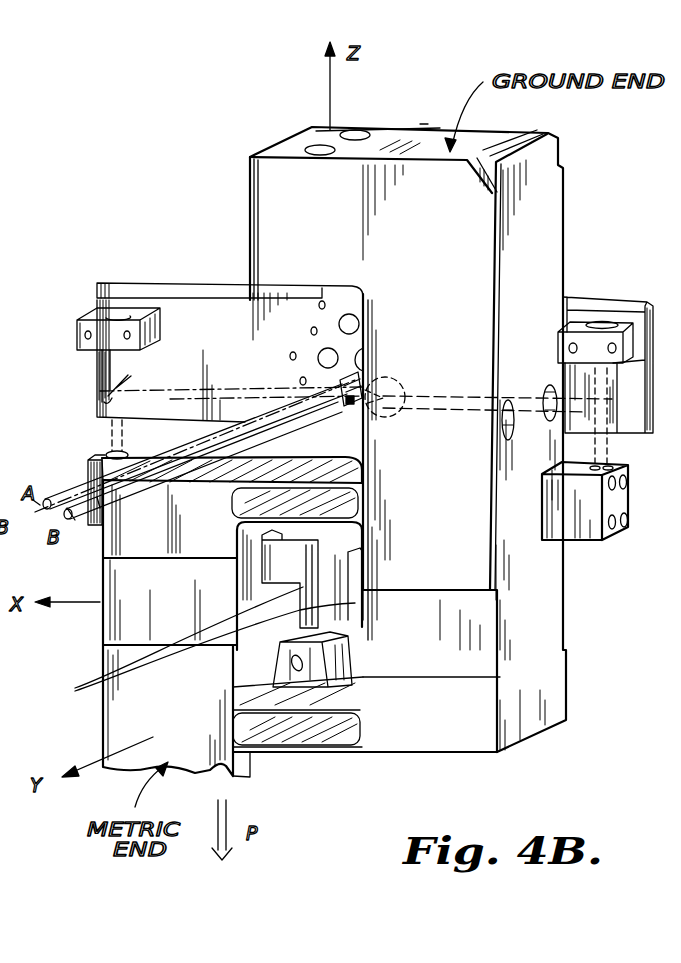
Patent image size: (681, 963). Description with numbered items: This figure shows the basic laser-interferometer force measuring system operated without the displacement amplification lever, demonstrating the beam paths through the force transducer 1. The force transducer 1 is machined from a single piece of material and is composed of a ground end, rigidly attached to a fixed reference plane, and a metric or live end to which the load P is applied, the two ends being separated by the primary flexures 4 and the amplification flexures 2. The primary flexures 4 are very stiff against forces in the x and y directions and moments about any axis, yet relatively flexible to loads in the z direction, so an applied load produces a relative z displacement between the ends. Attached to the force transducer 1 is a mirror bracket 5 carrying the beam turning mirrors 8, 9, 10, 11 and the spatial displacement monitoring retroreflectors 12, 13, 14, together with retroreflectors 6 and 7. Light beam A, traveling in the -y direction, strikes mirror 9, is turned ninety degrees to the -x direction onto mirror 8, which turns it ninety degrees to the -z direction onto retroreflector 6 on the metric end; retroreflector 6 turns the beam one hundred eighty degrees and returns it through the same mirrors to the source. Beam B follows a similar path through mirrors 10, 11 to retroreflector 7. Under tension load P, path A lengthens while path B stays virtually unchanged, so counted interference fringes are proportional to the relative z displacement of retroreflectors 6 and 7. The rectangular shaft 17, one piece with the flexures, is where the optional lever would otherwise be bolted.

The force transducer 1 is at (263, 178).
The amplification flexures 2 is at (78, 688).
The primary flexures 4 is at (338, 506).
The mirror bracket 5 is at (158, 296).
The retroreflector 6 is at (87, 472).
The retroreflector 7 is at (585, 543).
The beam turning mirror 8 is at (112, 370).
The beam turning mirror 9 is at (362, 375).
The beam turning mirror 10 is at (395, 420).
The beam turning mirror 11 is at (612, 388).
The spatial displacement monitoring retroreflector 12 is at (342, 316).
The spatial displacement monitoring retroreflector 13 is at (358, 348).
The spatial displacement monitoring retroreflector 14 is at (318, 352).
The rectangular shaft 17 is at (343, 655).